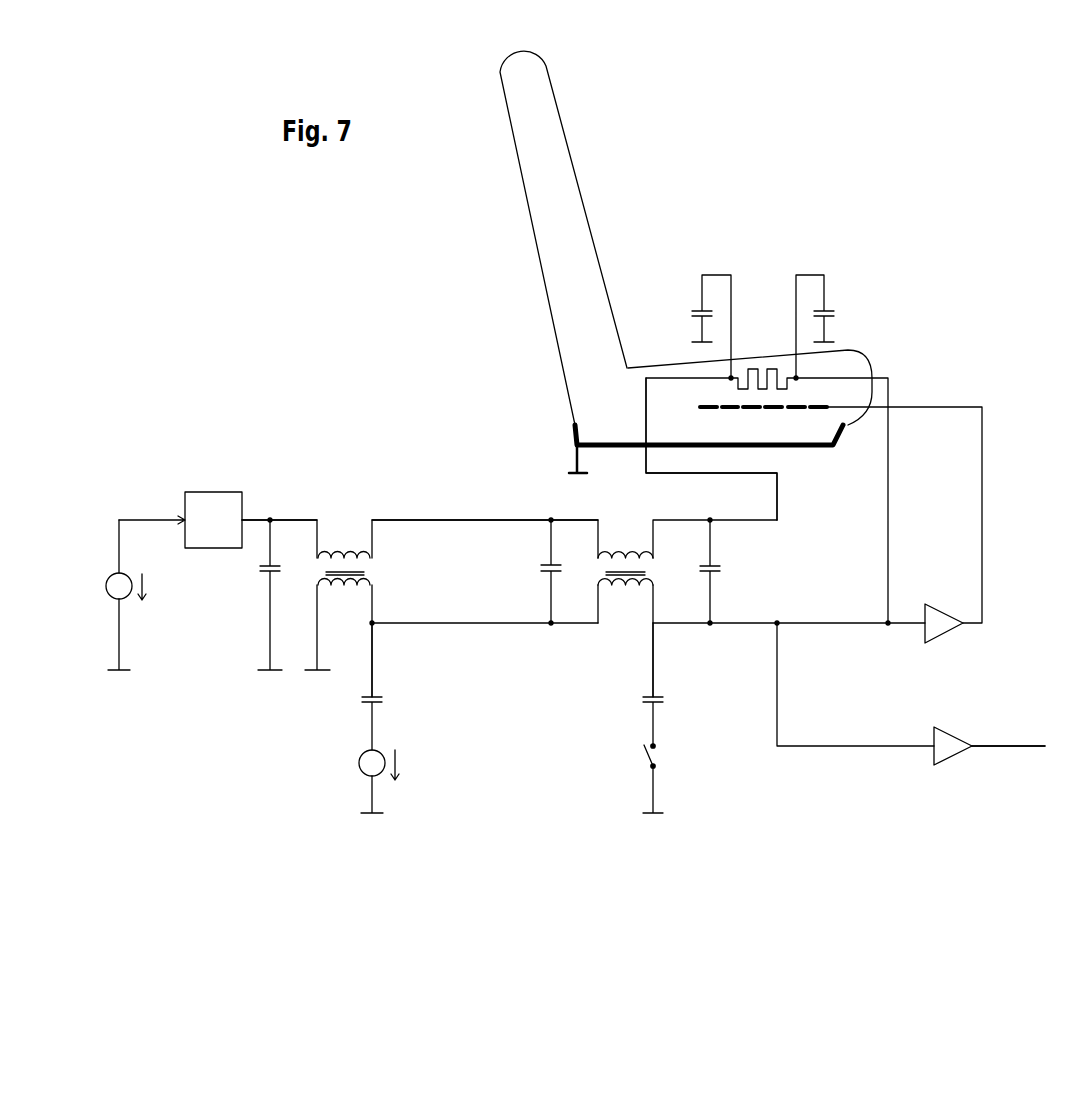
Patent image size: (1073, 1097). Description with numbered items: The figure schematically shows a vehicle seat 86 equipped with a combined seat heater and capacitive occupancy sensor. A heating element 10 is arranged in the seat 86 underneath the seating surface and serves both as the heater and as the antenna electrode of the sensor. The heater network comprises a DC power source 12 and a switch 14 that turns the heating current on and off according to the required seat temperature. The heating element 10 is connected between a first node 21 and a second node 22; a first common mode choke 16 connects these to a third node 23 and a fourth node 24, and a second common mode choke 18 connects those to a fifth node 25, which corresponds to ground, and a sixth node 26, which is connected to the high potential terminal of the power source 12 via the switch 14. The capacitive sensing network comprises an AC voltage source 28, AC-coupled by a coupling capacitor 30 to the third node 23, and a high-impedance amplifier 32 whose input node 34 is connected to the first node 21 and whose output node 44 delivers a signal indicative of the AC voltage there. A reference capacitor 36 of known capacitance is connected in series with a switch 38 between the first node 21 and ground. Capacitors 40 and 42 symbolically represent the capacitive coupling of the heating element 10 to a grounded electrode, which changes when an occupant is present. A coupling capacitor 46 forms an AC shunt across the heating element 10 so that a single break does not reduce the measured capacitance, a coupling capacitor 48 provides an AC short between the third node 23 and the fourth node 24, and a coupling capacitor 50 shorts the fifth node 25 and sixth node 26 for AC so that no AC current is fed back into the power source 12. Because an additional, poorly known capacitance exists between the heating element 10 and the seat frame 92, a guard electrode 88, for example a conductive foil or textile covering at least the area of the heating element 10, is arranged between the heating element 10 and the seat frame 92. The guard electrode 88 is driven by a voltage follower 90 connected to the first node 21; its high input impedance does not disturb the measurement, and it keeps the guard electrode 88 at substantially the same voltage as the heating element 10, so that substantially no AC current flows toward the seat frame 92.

The heating element 10 is at (759, 368).
The power source 12 is at (127, 571).
The switch 14 is at (203, 549).
The first common mode choke 16 is at (624, 587).
The second common mode choke 18 is at (346, 558).
The first node 21 is at (800, 622).
The second node 22 is at (779, 508).
The third node 23 is at (488, 621).
The fourth node 24 is at (452, 521).
The fifth node 25 is at (321, 646).
The sixth node 26 is at (313, 518).
The AC voltage source 28 is at (383, 751).
The coupling capacitor 30 is at (383, 697).
The high-impedance amplifier 32 is at (950, 728).
The input node 34 is at (890, 745).
The reference capacitor 36 is at (662, 698).
The switch 38 is at (647, 748).
The capacitor 40 is at (828, 311).
The capacitor 42 is at (693, 310).
The output node 44 is at (1000, 745).
The coupling capacitor 46 is at (714, 569).
The coupling capacitor 48 is at (558, 566).
The coupling capacitor 50 is at (265, 572).
The vehicle seat 86 is at (583, 186).
The guard electrode 88 is at (730, 410).
The voltage follower 90 is at (950, 608).
The seat frame 92 is at (614, 447).